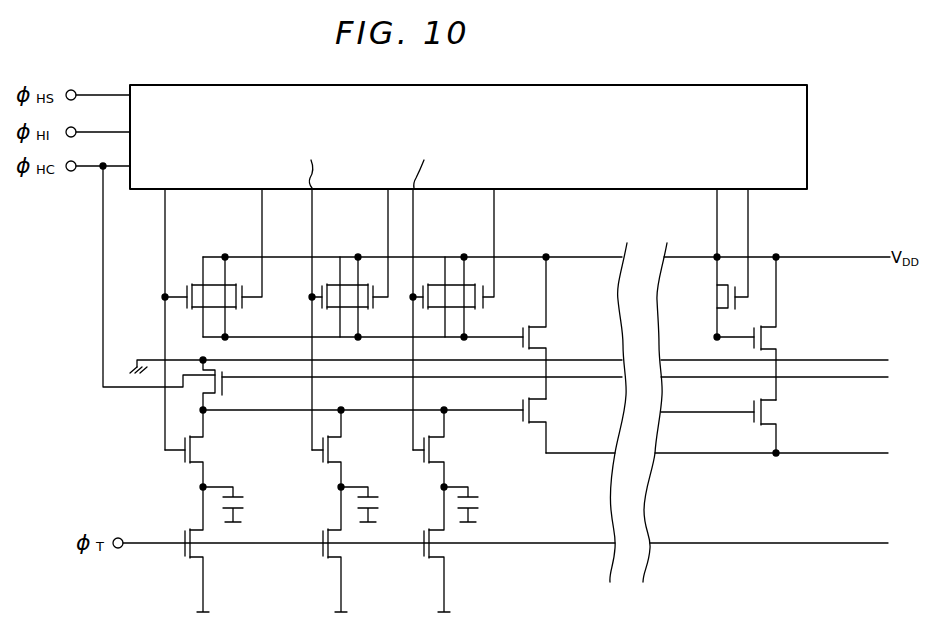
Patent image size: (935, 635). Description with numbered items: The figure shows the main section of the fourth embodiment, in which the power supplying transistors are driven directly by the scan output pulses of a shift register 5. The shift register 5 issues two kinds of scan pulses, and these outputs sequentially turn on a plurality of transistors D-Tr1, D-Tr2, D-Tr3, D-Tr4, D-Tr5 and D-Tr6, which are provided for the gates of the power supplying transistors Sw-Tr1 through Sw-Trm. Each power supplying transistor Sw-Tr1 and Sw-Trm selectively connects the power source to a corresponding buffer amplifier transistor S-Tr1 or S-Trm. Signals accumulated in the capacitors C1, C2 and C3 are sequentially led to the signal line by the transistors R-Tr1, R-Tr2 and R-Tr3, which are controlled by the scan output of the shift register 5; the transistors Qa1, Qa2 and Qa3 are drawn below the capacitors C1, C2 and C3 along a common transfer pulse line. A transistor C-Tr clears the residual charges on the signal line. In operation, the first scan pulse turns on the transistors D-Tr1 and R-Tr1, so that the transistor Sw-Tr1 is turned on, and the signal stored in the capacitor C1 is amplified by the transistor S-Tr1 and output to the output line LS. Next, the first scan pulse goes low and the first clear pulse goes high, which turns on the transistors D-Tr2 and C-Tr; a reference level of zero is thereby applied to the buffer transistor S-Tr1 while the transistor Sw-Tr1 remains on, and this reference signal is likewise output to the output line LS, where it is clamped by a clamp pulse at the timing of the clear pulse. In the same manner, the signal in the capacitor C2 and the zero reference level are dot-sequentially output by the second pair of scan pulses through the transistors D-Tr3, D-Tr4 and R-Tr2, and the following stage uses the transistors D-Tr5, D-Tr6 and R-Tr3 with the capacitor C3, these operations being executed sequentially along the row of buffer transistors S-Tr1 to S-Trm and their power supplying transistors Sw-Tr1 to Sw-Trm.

The shift register 5 is at (702, 85).
The transistor D-Tr1 is at (187, 286).
The transistor D-Tr2 is at (238, 311).
The transistor D-Tr3 is at (322, 286).
The transistor D-Tr4 is at (373, 286).
The transistor D-Tr5 is at (424, 285).
The transistor D-Tr6 is at (478, 285).
The transistor C-Tr is at (225, 385).
The transistor R-Tr1 is at (196, 446).
The transistor R-Tr2 is at (334, 446).
The transistor R-Tr3 is at (435, 446).
The capacitor C1 is at (234, 503).
The capacitor C2 is at (370, 503).
The capacitor C3 is at (473, 503).
The transfer transistor Qa1 is at (211, 549).
The transfer transistor Qa2 is at (349, 549).
The transfer transistor Qa3 is at (451, 549).
The power supplying transistor Sw-Tr1 is at (540, 336).
The buffer transistor S-Tr1 is at (540, 409).
The power supplying transistor Sw-Trm is at (768, 340).
The buffer amplifier S-Trm is at (768, 414).
The output line LS is at (821, 456).